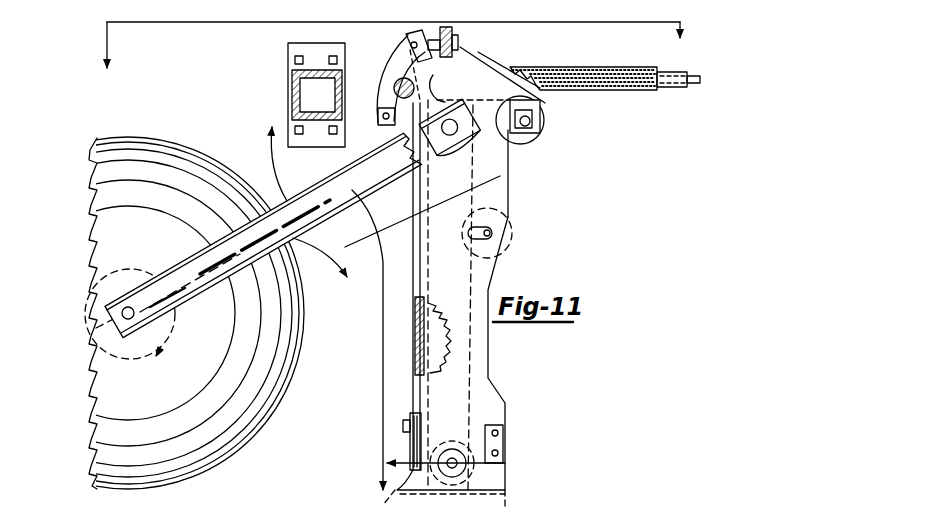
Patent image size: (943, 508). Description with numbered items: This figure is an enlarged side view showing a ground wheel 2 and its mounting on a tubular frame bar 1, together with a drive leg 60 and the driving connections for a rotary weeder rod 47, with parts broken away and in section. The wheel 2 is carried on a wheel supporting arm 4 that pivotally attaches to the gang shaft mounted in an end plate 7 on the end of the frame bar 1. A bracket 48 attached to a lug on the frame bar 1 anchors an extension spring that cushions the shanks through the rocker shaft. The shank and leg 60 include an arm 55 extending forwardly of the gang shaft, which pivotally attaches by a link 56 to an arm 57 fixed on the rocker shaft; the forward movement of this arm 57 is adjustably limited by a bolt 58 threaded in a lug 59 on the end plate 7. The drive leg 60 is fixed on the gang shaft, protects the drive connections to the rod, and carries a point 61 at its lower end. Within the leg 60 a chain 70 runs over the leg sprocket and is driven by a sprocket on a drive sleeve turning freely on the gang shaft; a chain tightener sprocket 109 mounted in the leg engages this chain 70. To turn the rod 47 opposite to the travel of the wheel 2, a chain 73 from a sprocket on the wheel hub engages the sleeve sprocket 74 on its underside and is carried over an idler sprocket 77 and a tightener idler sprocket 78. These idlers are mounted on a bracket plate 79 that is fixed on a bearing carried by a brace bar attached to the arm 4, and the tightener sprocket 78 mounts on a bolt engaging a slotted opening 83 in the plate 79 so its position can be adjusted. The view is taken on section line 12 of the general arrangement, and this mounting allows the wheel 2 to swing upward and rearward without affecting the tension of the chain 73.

The tubular frame bar 1 is at (313, 112).
The wheel 2 is at (253, 433).
The arm 4 is at (317, 180).
The end plate 7 is at (346, 48).
The section line 12 is at (395, 65).
The weeder rod 47 is at (458, 459).
The bracket 48 is at (667, 88).
The arm 55 is at (376, 110).
The link 56 is at (386, 63).
The arm 57 is at (420, 35).
The bolt 58 is at (457, 37).
The lug 59 is at (457, 43).
The drive leg 60 is at (488, 362).
The point 61 is at (411, 413).
The chain 70 is at (433, 340).
The chain 73 is at (500, 176).
The sprocket 74 is at (478, 133).
The idler sprocket 77 is at (478, 67).
The tightener idler sprocket 78 is at (543, 105).
The bracket plate 79 is at (540, 135).
The slotted opening 83 is at (530, 121).
The sprocket 109 is at (512, 233).